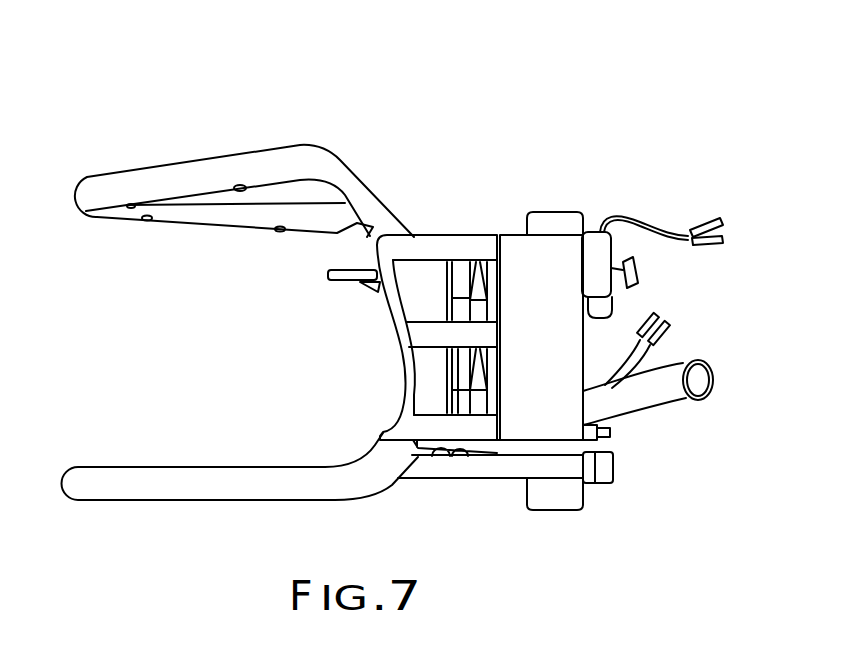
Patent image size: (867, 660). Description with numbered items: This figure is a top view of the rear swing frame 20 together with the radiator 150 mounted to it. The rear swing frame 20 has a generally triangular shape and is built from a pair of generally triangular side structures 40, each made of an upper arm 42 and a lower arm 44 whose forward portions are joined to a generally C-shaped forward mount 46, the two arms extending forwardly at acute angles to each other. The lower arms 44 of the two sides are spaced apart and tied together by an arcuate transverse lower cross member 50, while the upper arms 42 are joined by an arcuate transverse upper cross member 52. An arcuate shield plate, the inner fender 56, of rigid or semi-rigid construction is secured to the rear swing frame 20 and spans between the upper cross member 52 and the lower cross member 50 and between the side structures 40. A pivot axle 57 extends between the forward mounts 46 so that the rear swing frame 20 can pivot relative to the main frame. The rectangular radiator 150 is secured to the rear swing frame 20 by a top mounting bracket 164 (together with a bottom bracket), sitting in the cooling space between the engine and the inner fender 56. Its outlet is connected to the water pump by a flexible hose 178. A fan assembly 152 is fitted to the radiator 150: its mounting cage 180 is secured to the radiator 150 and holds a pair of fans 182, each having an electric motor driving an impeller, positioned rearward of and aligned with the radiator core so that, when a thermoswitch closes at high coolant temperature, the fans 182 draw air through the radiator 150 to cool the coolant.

The rear swing frame 20 is at (143, 531).
The side structure 40 is at (380, 163).
The upper arm 42 is at (205, 168).
The lower arm 44 is at (218, 218).
The forward mount 46 is at (473, 470).
The lower cross member 50 is at (375, 263).
The upper cross member 52 is at (388, 208).
The inner fender 56 is at (393, 300).
The pivot axle 57 is at (561, 222).
The radiator 150 is at (587, 540).
The fan assembly 152 is at (497, 300).
The top mounting bracket 164 is at (565, 337).
The flexible hose 178 is at (650, 402).
The mounting cage 180 is at (487, 272).
The fan 182 is at (460, 375).